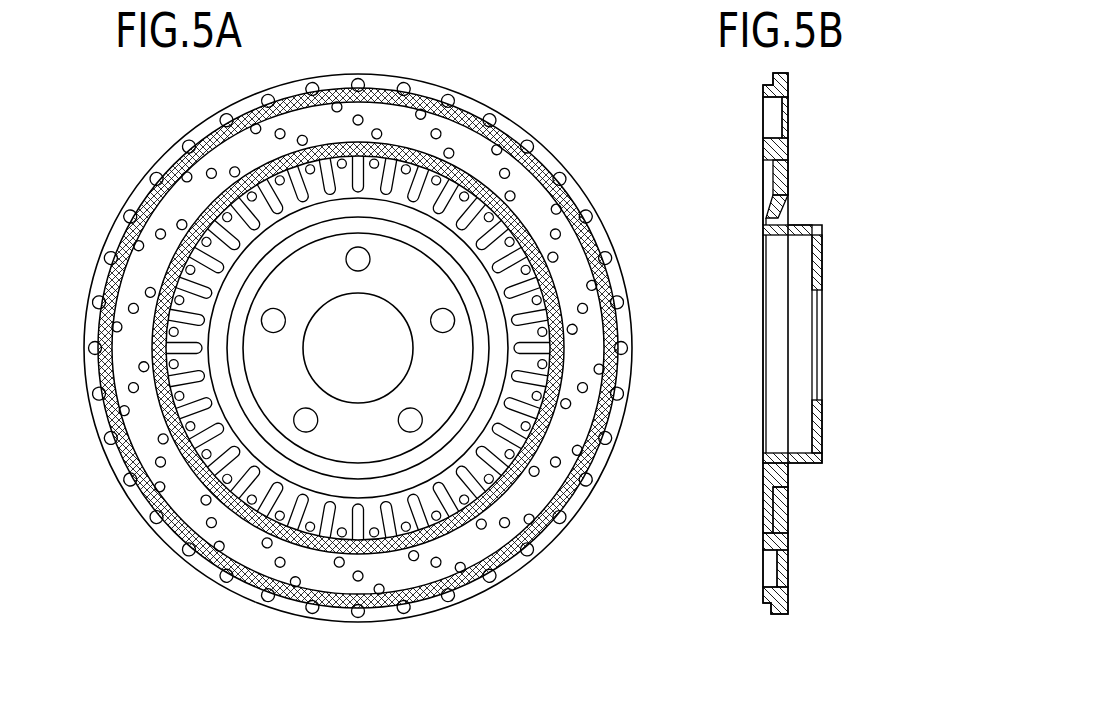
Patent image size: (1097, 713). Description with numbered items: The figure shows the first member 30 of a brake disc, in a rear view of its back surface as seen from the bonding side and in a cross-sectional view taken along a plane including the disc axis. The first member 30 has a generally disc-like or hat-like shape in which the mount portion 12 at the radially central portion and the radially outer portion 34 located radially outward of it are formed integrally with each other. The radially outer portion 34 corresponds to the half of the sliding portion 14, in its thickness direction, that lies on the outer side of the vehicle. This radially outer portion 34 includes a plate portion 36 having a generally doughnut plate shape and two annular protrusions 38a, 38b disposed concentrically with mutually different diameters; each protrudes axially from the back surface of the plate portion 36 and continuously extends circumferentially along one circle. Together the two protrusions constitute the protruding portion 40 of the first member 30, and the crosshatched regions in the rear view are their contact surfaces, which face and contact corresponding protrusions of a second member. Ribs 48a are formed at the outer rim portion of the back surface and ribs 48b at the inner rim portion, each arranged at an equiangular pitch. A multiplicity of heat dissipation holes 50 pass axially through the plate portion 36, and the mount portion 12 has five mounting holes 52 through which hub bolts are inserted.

In FIG. 5A, the first member 30 is at (138, 131).
In FIG. 5B, the first member 30 is at (836, 90).
In FIG. 5A, the sliding portion 14 is at (353, 348).
In FIG. 5B, the sliding portion 14 is at (777, 343).
In FIG. 5A, the radially outer portion 34 is at (80, 410).
In FIG. 5B, the radially outer portion 34 is at (808, 141).
In FIG. 5A, the mount portion 12 is at (230, 437).
In FIG. 5B, the mount portion 12 is at (835, 262).
In FIG. 5A, the plate portion 36 is at (480, 150).
In FIG. 5B, the plate portion 36 is at (787, 553).
In FIG. 5A, the annular protrusion 38a is at (572, 198).
In FIG. 5B, the annular protrusion 38a is at (763, 595).
In FIG. 5A, the annular protrusion 38b is at (518, 167).
In FIG. 5B, the annular protrusion 38b is at (763, 540).
In FIG. 5A, the protruding portion 40 is at (686, 161).
In FIG. 5B, the protruding portion 40 is at (681, 522).
In FIG. 5A, the ribs 48a is at (146, 517).
In FIG. 5A, the ribs 48b is at (147, 493).
In FIG. 5A, the heat dissipation holes 50 is at (137, 307).
In FIG. 5B, the heat dissipation holes 50 is at (782, 120).
In FIG. 5A, the mounting holes 52 is at (438, 324).
In FIG. 5B, the mounting holes 52 is at (820, 430).